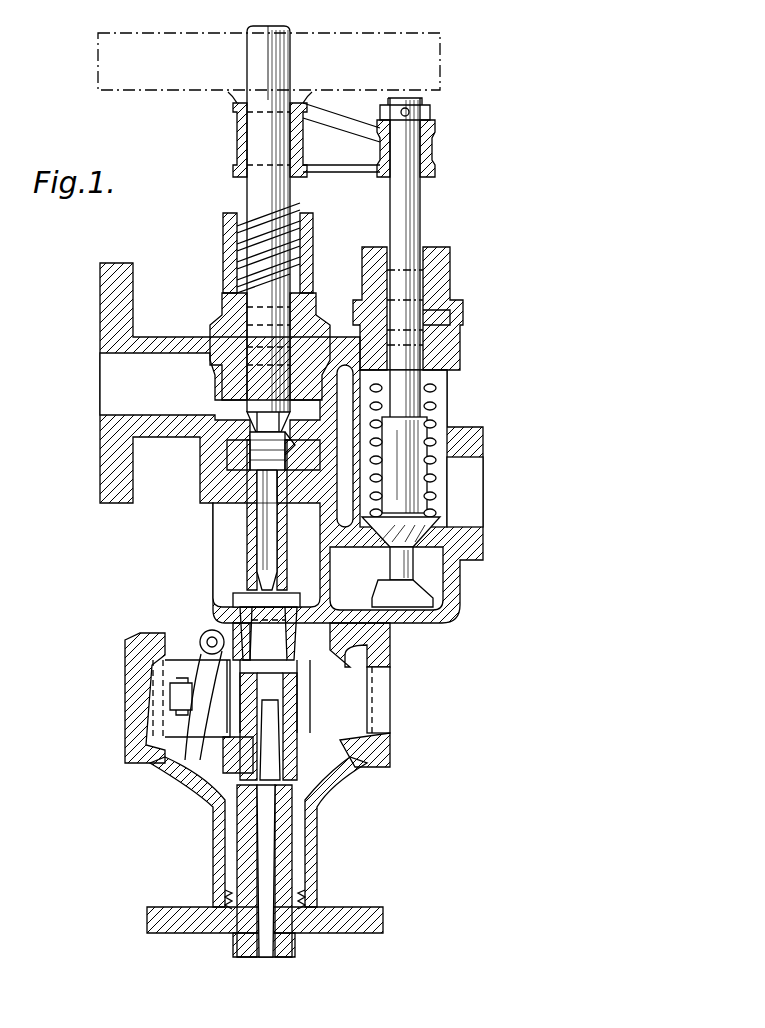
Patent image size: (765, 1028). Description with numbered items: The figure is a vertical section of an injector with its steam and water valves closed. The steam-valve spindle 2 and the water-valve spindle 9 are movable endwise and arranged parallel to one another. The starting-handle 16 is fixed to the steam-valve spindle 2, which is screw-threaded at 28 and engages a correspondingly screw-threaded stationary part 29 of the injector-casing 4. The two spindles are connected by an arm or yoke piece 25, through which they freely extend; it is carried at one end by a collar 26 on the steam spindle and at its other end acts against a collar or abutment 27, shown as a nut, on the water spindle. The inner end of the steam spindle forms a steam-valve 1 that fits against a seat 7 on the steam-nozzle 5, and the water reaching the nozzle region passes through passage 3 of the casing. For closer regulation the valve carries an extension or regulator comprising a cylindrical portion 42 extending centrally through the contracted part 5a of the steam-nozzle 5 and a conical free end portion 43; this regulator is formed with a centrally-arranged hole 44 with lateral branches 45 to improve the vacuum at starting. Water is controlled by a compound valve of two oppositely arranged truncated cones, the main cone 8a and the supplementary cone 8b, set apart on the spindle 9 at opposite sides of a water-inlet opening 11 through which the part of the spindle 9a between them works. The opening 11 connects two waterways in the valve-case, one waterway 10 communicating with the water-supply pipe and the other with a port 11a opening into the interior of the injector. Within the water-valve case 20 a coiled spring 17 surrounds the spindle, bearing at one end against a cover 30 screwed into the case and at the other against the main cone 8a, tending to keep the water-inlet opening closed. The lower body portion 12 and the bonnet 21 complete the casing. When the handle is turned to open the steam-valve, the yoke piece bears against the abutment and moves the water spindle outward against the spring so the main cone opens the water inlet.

The steam-valve 1 is at (250, 420).
The steam-valve spindle 2 is at (285, 191).
The inlet passage 3 is at (210, 396).
The injector-casing 4 is at (207, 577).
The steam-nozzle 5 is at (250, 530).
The contracted part of the steam-nozzle 5a is at (255, 462).
The seat 7 is at (288, 432).
The main cone 8a is at (401, 532).
The supplementary cone 8b is at (433, 592).
The water-valve spindle 9 is at (404, 305).
The part of the spindle between the two cones 9a is at (415, 565).
The waterway 10 is at (465, 492).
The water-inlet opening 11 is at (380, 547).
The port 11a is at (276, 555).
The plug 12 is at (266, 626).
The starting-handle 16 is at (269, 61).
The coiled spring 17 is at (437, 393).
The water-valve case 20 is at (422, 620).
The bonnet 21 is at (372, 298).
The arm or yoke piece 25 is at (369, 140).
The collar 26 is at (240, 184).
The collar or abutment 27 is at (430, 113).
The screw-thread 28 is at (302, 248).
The screw-threaded stationary part 29 is at (228, 270).
The cover 30 is at (440, 350).
The cylindrical portion 42 is at (262, 445).
The conical free end portion 43 is at (270, 478).
The centrally-arranged hole 44 is at (286, 510).
The lateral branches 45 is at (265, 407).